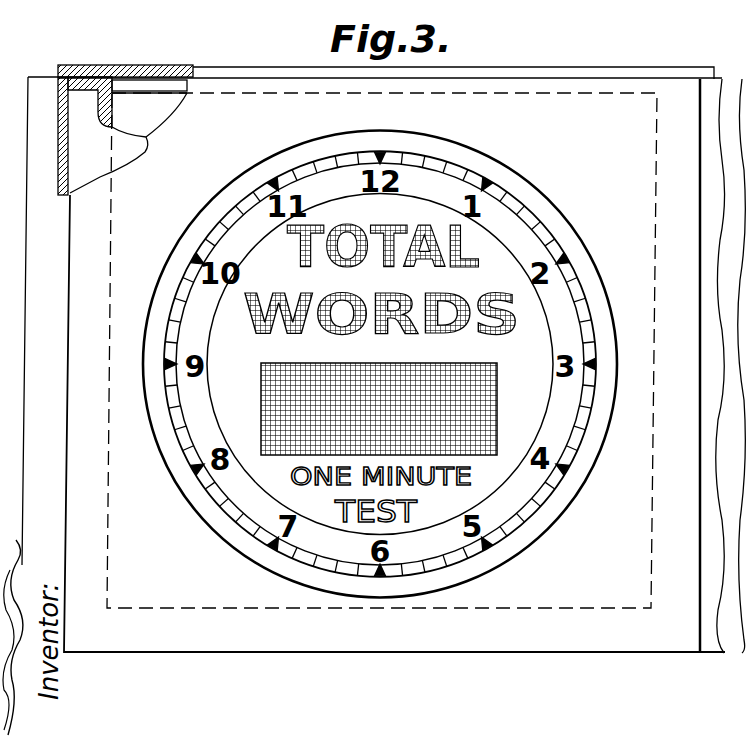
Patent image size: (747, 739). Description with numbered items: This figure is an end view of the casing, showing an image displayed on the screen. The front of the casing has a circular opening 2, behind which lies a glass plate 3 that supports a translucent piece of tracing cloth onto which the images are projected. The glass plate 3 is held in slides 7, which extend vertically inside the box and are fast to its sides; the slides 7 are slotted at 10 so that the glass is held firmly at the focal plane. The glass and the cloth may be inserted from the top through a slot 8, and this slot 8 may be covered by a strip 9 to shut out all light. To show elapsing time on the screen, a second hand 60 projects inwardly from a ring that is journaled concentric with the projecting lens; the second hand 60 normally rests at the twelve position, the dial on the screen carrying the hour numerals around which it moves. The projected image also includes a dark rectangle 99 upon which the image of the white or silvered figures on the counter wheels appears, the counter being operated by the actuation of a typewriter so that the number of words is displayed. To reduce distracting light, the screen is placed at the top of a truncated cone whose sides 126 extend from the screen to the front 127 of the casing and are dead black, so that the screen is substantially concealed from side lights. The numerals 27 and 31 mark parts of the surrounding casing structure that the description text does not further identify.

The circular opening 2 is at (613, 405).
The glass plate 3 is at (175, 105).
The slides 7 is at (127, 160).
The slot 8 is at (152, 72).
The strip 9 is at (240, 67).
The slots of the slides 10 is at (112, 113).
The side strip 27 is at (635, 78).
The side wall 31 is at (58, 184).
The second hand 60 is at (373, 170).
The dark rectangle 99 is at (497, 409).
The sides of truncated cone 126 is at (510, 178).
The front of the casing 127 is at (526, 652).